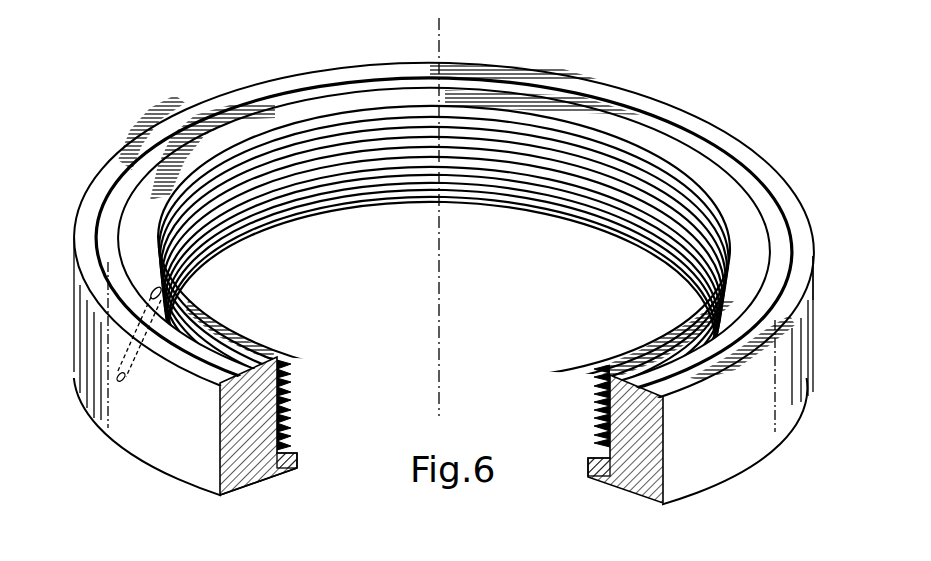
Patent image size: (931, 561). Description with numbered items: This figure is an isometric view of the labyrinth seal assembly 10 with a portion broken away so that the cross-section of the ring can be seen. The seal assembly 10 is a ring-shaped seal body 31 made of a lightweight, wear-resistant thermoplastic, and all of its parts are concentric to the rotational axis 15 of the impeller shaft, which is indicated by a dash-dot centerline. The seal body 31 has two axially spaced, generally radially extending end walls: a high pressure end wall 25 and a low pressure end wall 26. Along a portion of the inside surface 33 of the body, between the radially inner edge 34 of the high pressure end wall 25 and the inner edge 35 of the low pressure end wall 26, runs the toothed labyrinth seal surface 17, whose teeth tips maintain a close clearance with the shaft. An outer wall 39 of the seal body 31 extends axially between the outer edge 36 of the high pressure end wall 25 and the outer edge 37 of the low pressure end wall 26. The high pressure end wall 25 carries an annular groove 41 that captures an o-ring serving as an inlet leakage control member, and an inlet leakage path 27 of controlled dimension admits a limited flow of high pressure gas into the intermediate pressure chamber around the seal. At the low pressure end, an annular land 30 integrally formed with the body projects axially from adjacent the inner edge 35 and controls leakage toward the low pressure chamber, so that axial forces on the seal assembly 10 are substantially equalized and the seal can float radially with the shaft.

The seal assembly 10 is at (860, 265).
The rotational axis 15 is at (440, 38).
The labyrinth seal surface 17 is at (293, 400).
The high pressure end wall 25 is at (192, 300).
The low pressure end wall 26 is at (262, 479).
The inlet leakage path 27 is at (150, 289).
The land 30 is at (588, 470).
The seal body 31 is at (748, 463).
The inside surface 33 is at (290, 453).
The inner edge of high pressure end wall 34 is at (238, 338).
The inner edge of low pressure end wall 35 is at (474, 206).
The outer edge of high pressure end wall 36 is at (170, 368).
The outer edge of low pressure end wall 37 is at (146, 456).
The outer wall 39 is at (763, 405).
The annular groove 41 is at (777, 240).